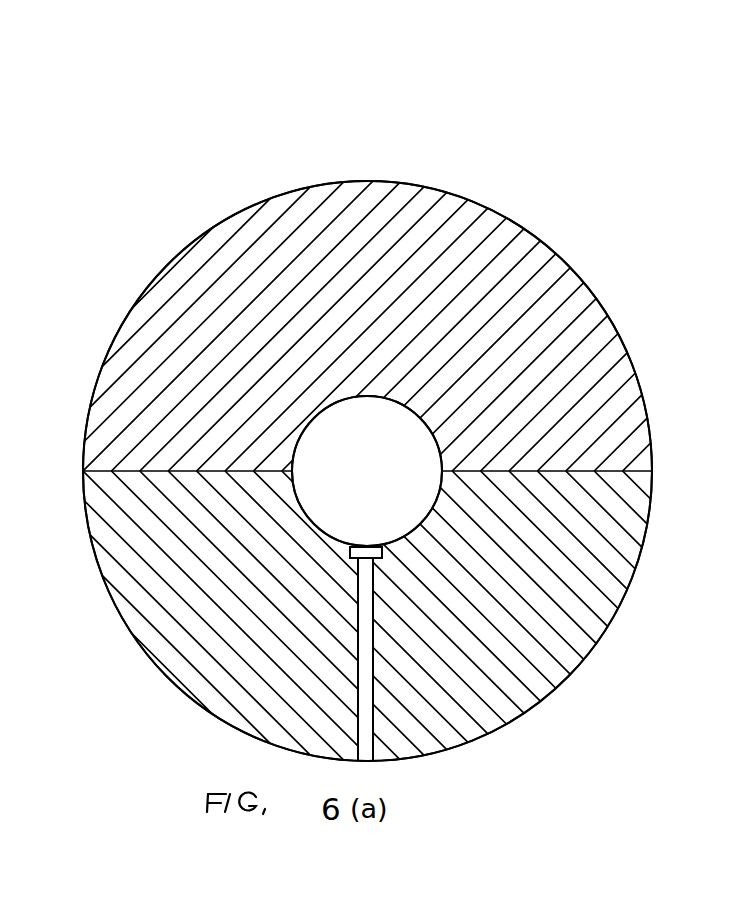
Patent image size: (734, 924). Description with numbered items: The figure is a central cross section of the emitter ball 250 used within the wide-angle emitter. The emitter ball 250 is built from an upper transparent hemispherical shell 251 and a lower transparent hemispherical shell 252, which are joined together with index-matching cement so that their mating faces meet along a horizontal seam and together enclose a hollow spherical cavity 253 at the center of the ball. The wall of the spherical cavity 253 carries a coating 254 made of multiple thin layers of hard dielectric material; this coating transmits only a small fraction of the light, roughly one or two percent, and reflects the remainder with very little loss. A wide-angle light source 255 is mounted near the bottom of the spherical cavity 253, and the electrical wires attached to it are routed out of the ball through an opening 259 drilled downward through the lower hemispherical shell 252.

The emitter ball 250 is at (160, 110).
The upper transparent hemispherical shell 251 is at (580, 277).
The lower transparent hemispherical shell 252 is at (625, 598).
The hollow spherical cavity 253 is at (367, 471).
The coating 254 is at (403, 400).
The wide-angle light source 255 is at (382, 552).
The opening 259 is at (374, 615).